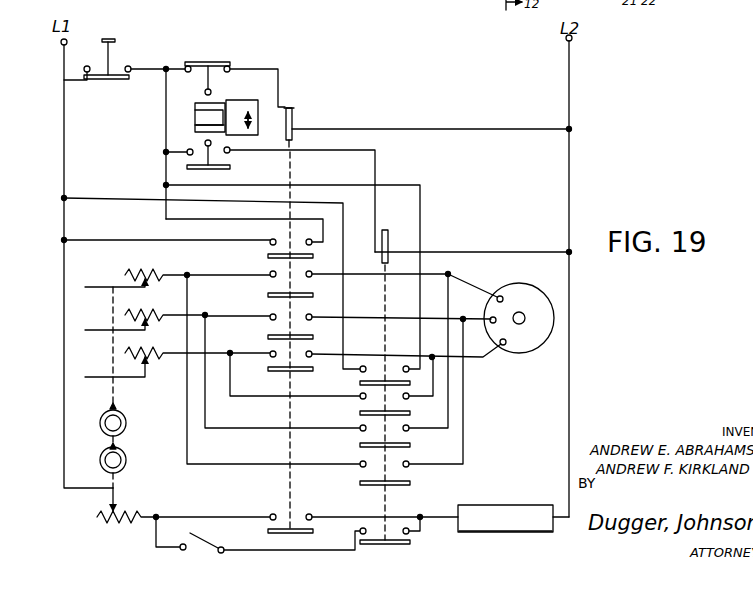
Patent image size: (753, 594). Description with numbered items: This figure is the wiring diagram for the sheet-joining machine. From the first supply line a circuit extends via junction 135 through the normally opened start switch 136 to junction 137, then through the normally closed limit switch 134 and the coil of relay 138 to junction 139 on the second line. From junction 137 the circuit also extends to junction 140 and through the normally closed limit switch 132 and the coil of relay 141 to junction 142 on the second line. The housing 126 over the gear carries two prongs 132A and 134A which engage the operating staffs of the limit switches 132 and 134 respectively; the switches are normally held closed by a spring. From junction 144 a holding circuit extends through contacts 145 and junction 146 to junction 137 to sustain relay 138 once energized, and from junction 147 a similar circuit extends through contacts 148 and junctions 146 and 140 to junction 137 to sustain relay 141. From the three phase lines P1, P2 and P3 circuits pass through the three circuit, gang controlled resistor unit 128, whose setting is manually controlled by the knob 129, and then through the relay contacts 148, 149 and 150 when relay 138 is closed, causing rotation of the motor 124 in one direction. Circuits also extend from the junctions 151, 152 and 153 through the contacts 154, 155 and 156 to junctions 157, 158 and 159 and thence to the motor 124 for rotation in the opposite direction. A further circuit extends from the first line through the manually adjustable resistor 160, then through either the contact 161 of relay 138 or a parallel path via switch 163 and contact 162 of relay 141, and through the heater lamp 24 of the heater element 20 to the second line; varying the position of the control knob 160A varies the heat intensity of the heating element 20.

The junction 135 is at (64, 80).
The start switch 136 is at (116, 81).
The junction 137 is at (166, 69).
The limit switch 134 is at (218, 68).
The prong 134A is at (195, 107).
The prong 132A is at (195, 125).
The housing 126 is at (257, 102).
The relay 138 is at (288, 106).
The junction 139 is at (569, 129).
The junction 140 is at (166, 152).
The limit switch 132 is at (231, 162).
The relay 141 is at (392, 223).
The junction 142 is at (569, 252).
The junction 146 is at (166, 185).
The junction 147 is at (64, 198).
The junction 144 is at (64, 240).
The contacts 145 is at (268, 255).
The contacts 148 is at (273, 296).
The contacts 149 is at (273, 338).
The contacts 150 is at (277, 370).
The junction 151 is at (193, 268).
The junction 152 is at (209, 309).
The junction 153 is at (230, 353).
The gang controlled resistor unit 128 is at (148, 312).
The three phase line P1 is at (127, 282).
The three phase line P2 is at (135, 323).
The three phase line P3 is at (148, 364).
The knob 129 is at (126, 423).
The control knob 160A is at (124, 466).
The junction 157 is at (448, 274).
The junction 158 is at (464, 318).
The junction 159 is at (432, 357).
The motor 124 is at (554, 314).
The contacts 154 is at (362, 403).
The contacts 155 is at (362, 437).
The contacts 156 is at (362, 473).
The manually adjustable resistor 160 is at (141, 518).
The switch 163 is at (221, 546).
The contact 161 is at (282, 513).
The contact 162 is at (395, 528).
The heater element 20 is at (503, 504).
The heater lamp 24 is at (468, 533).